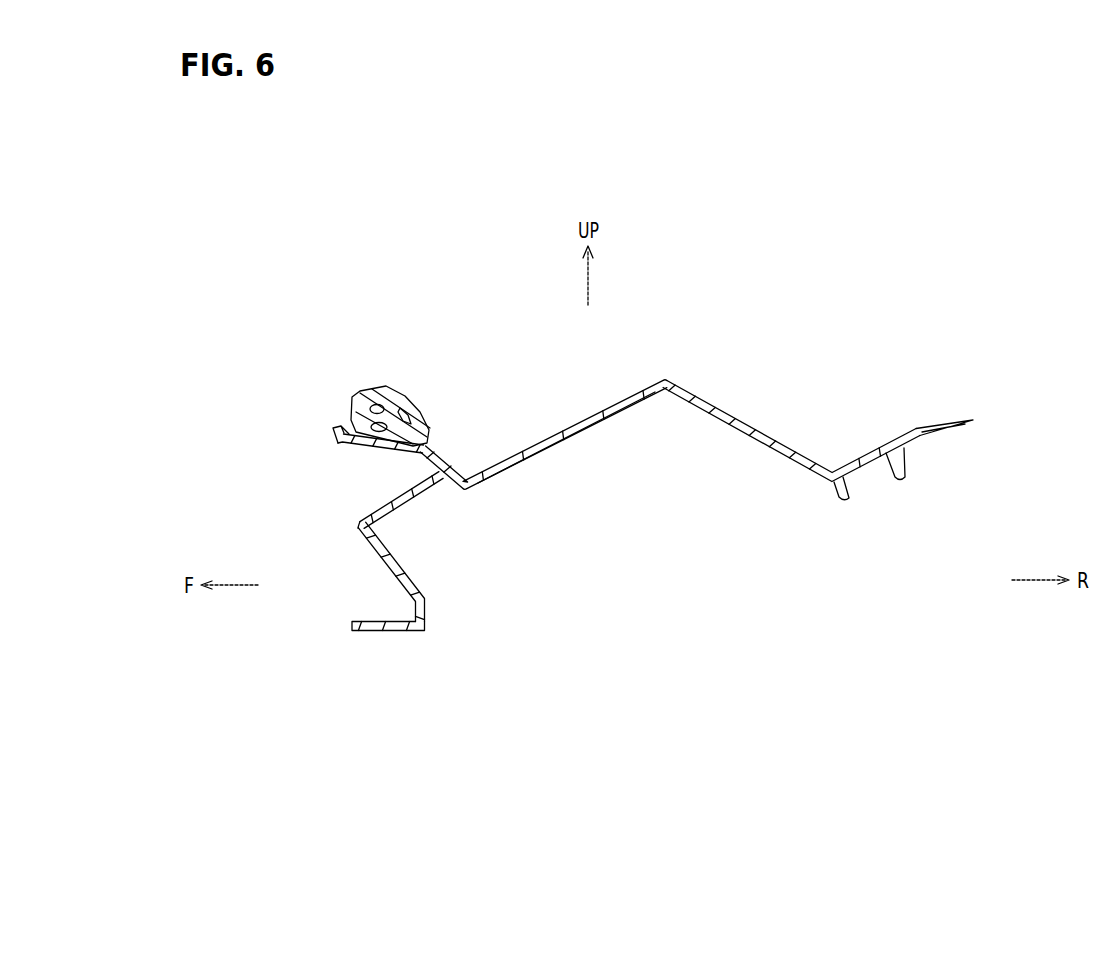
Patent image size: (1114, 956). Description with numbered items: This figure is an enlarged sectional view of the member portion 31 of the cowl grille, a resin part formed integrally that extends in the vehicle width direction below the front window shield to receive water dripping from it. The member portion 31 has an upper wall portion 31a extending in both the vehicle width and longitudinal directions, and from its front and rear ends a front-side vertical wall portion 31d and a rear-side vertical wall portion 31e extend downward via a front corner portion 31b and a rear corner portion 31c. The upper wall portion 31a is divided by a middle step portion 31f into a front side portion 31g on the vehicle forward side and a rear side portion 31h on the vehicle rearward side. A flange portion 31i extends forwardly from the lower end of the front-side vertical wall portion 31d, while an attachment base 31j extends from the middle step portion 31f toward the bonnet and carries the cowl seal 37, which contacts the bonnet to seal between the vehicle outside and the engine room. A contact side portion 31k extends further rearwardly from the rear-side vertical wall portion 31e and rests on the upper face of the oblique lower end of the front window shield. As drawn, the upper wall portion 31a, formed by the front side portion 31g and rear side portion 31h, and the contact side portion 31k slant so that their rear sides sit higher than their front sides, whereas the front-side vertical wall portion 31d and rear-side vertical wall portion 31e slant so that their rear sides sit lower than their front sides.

The member portion 31 is at (688, 336).
The upper wall portion 31a is at (593, 505).
The front corner portion 31b is at (355, 523).
The rear corner portion 31c is at (672, 383).
The front-side vertical wall portion 31d is at (385, 565).
The rear-side vertical wall portion 31e is at (750, 430).
The middle step portion 31f is at (470, 478).
The front side portion 31g is at (415, 503).
The rear side portion 31h is at (525, 477).
The flange portion 31i is at (375, 635).
The attachment base 31j is at (385, 450).
The contact side portion 31k is at (905, 426).
The cowl seal 37 is at (402, 390).